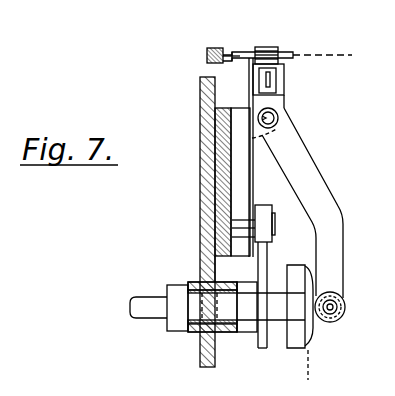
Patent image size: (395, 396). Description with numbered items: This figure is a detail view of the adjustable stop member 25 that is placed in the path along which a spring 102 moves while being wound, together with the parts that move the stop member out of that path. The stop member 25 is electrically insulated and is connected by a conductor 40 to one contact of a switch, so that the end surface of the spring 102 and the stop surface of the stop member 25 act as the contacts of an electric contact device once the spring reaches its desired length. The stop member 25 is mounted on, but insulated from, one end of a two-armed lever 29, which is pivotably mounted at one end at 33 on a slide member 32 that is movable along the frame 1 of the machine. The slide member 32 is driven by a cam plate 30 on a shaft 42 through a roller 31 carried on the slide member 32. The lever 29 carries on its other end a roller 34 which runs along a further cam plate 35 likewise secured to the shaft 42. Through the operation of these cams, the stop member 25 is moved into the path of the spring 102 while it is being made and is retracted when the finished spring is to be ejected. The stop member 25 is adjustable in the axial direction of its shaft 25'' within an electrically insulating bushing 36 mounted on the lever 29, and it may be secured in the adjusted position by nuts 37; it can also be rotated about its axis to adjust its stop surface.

The frame 1 is at (200, 124).
The stop member 25 is at (229, 71).
The shaft of stop member 25'' is at (229, 77).
The two-armed lever 29 is at (318, 190).
The cam plate 30 is at (268, 262).
The roller 31 is at (262, 206).
The slide member 32 is at (236, 196).
The pivot 33 is at (280, 116).
The roller 34 is at (347, 307).
The cam plate 35 is at (312, 329).
The electrically insulating bushing 36 is at (268, 48).
The nuts 37 is at (257, 50).
The conductor 40 is at (320, 58).
The shaft 42 is at (148, 304).
The spring 102 is at (207, 53).